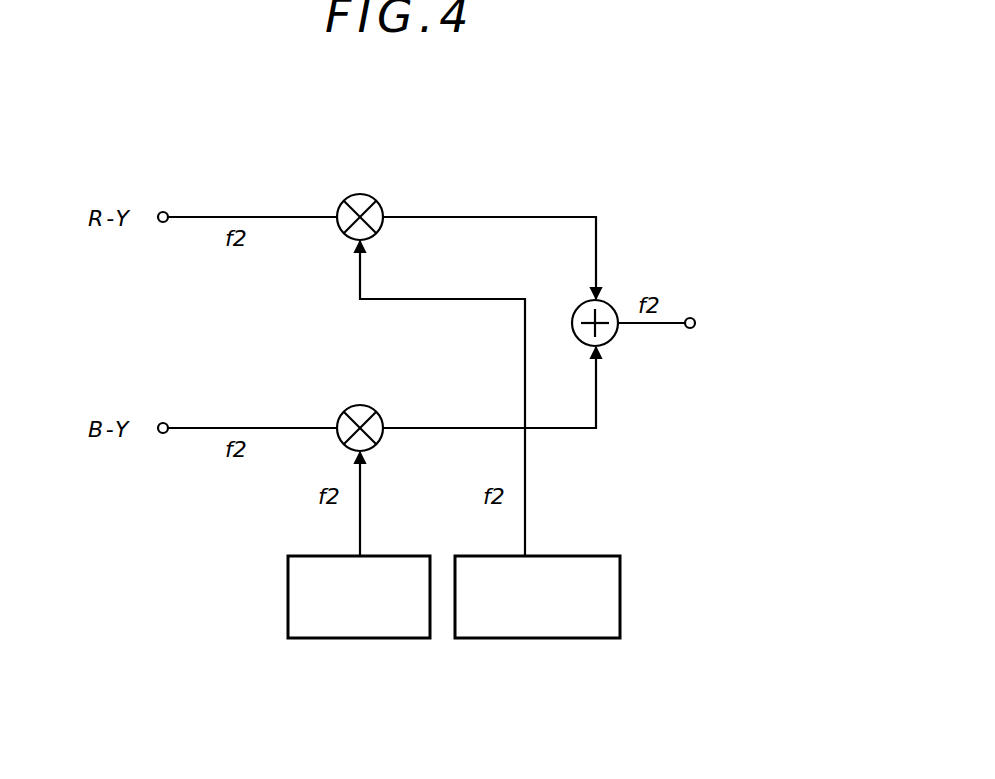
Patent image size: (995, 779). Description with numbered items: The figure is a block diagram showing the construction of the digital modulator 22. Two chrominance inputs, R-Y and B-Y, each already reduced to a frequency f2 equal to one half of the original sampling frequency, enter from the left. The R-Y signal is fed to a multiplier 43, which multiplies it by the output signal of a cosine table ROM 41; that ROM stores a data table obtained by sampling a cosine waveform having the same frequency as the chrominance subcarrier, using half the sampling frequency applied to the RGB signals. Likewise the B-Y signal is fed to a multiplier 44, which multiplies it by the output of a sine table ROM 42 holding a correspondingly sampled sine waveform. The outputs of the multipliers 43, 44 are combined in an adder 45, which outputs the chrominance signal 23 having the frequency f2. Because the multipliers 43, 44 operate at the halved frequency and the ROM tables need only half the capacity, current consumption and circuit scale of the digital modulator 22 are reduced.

The digital modulator 22 is at (630, 172).
The chrominance signal 23 is at (677, 318).
The cosine table ROM 41 is at (620, 608).
The sine table ROM 42 is at (288, 605).
The multiplier 43 is at (358, 193).
The multiplier 44 is at (358, 404).
The adder 45 is at (616, 339).